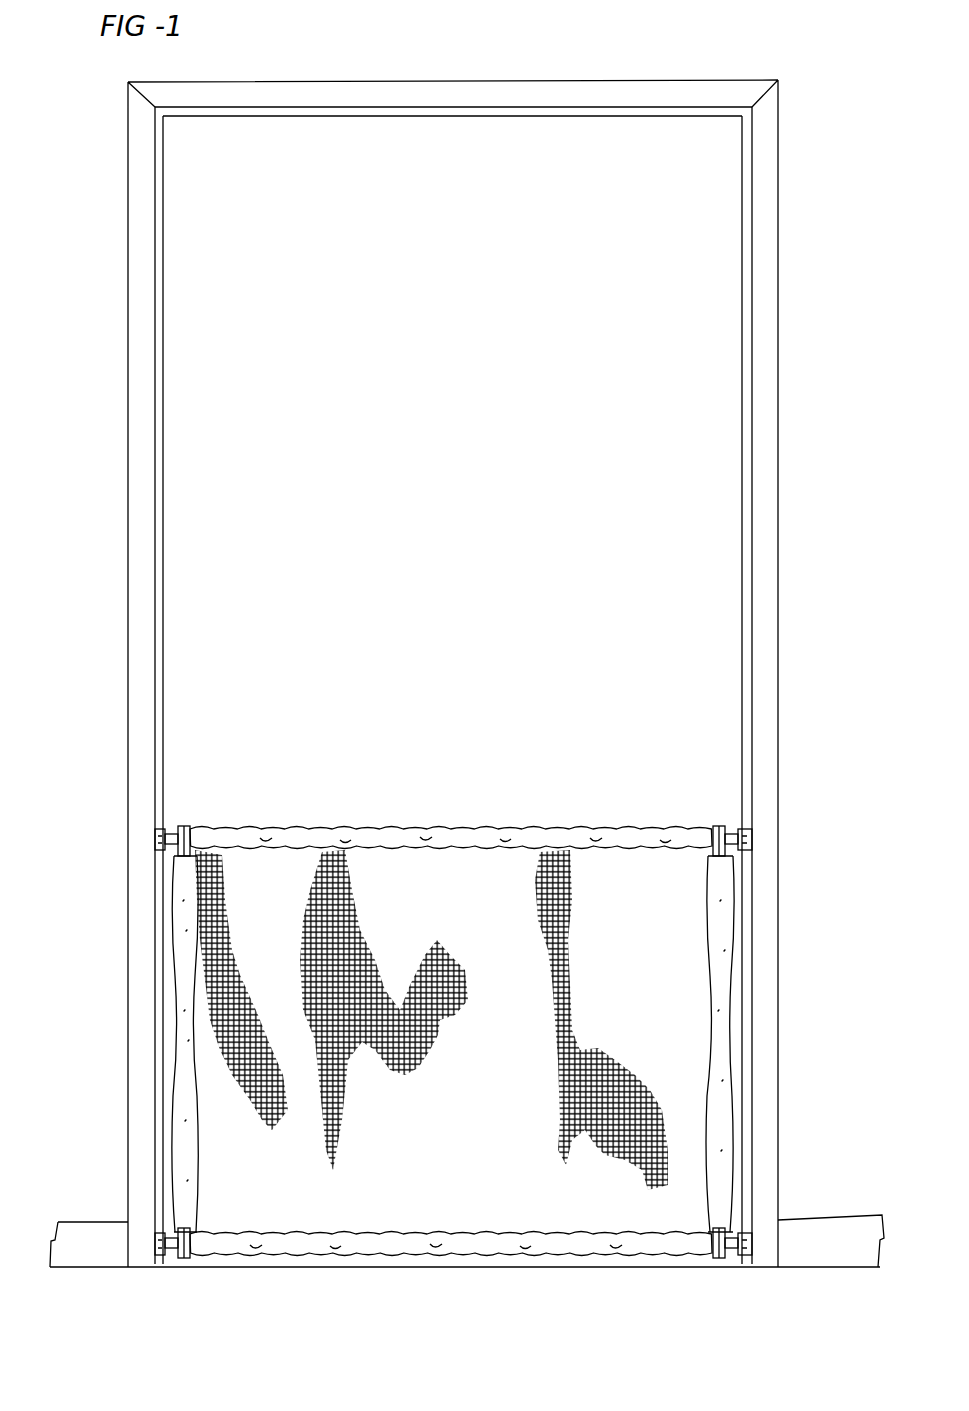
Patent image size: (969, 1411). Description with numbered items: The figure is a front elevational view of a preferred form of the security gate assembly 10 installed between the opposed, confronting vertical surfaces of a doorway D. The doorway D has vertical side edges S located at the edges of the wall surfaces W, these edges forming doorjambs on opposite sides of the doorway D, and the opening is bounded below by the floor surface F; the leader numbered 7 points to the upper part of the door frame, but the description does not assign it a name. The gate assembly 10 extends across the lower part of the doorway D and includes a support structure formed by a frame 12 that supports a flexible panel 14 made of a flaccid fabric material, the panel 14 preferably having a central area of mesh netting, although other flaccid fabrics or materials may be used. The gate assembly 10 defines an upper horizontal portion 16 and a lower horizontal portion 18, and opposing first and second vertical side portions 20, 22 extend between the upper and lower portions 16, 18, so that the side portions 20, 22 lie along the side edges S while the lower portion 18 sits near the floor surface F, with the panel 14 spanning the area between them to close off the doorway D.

The door frame header 7 is at (466, 98).
The doorway D is at (182, 217).
The vertical side edges S is at (163, 395).
The wall surfaces W is at (125, 460).
The floor surface F is at (410, 1266).
The security gate assembly 10 is at (156, 947).
The frame 12 is at (182, 1262).
The flexible panel 14 is at (497, 860).
The upper horizontal portion 16 is at (378, 836).
The lower horizontal portion 18 is at (645, 1232).
The first vertical side portion 20 is at (185, 1050).
The second vertical side portion 22 is at (725, 975).